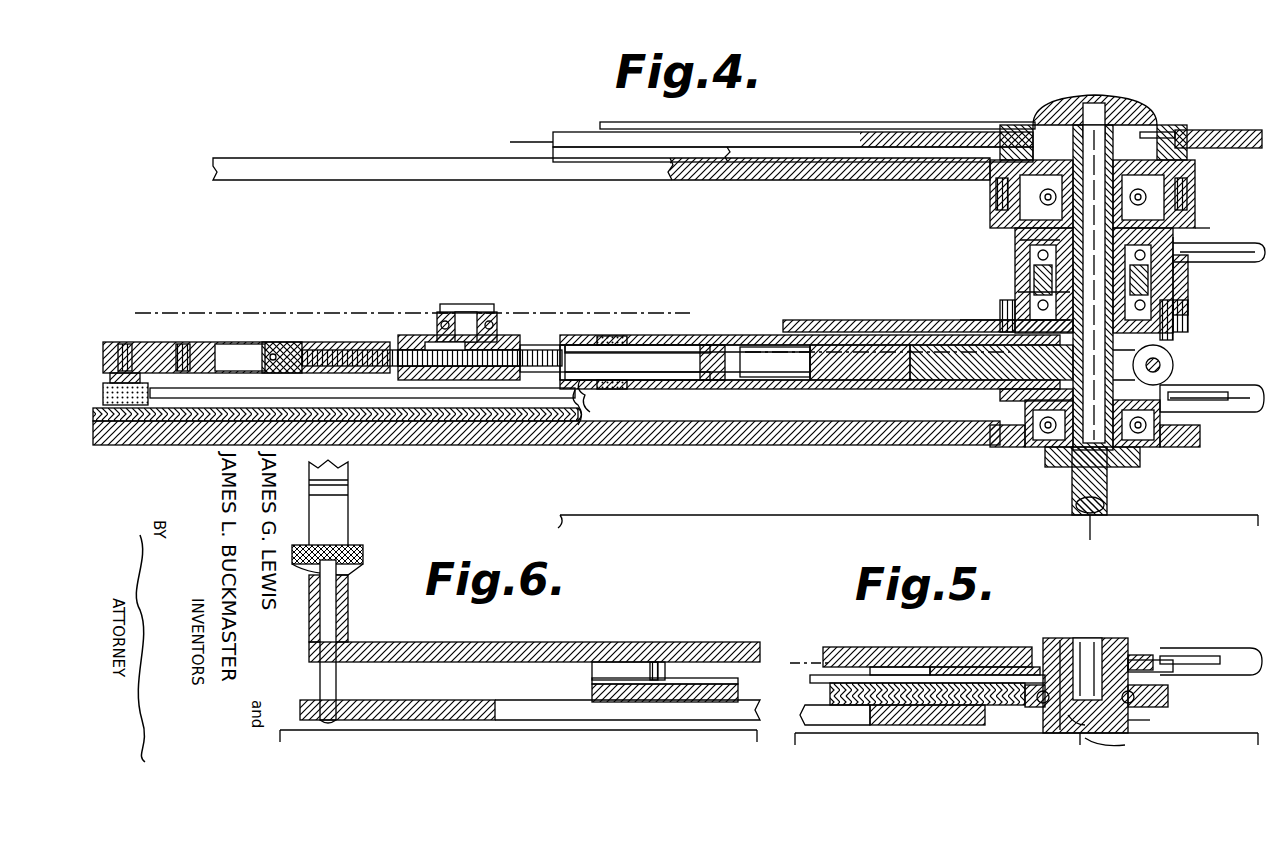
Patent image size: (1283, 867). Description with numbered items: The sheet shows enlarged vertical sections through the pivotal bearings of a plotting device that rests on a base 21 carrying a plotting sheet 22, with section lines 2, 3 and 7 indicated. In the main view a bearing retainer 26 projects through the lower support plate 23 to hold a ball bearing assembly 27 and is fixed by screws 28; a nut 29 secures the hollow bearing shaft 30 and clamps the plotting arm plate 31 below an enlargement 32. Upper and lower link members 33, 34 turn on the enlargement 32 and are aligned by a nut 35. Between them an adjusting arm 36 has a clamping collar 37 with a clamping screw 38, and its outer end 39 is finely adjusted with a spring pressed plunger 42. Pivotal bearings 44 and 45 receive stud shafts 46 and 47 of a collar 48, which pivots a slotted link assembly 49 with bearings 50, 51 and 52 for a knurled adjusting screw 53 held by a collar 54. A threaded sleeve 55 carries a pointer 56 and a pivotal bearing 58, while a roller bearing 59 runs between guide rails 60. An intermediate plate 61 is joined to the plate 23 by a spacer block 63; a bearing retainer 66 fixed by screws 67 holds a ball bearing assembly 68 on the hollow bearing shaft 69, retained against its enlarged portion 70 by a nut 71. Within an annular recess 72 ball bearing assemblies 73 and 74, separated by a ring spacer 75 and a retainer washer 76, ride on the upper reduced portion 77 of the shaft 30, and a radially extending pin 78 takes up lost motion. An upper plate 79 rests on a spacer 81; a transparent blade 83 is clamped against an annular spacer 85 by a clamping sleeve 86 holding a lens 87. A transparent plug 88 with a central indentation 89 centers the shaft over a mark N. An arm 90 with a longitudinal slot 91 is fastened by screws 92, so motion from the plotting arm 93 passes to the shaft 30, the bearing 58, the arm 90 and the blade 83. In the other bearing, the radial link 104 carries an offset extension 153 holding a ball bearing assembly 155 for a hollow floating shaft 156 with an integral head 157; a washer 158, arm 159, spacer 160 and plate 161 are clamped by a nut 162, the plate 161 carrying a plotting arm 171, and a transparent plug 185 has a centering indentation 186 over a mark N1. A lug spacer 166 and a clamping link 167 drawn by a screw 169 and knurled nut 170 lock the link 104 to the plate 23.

In FIG. 4, the section line 2- 2 is at (123, 302).
In FIG. 5, the section line 3- 3 is at (795, 658).
In FIG. 4, the section line 7- 7 is at (748, 348).
In FIG. 4, the base 21 is at (760, 506).
In FIG. 6, the base 21 is at (435, 732).
In FIG. 5, the base 21 is at (840, 734).
In FIG. 4, the plotting sheet 22 is at (1192, 513).
In FIG. 5, the plotting sheet 22 is at (1225, 733).
In FIG. 4, the lower support plate 23 is at (525, 445).
In FIG. 6, the lower support plate 23 is at (540, 630).
In FIG. 5, the lower support plate 23 is at (860, 647).
In FIG. 4, the bearing retainer 26 is at (1035, 447).
In FIG. 4, the ball bearing assembly 27 is at (1025, 400).
In FIG. 4, the screws 28 is at (1000, 450).
In FIG. 4, the nut 29 is at (1115, 467).
In FIG. 4, the hollow bearing shaft 30 is at (1075, 482).
In FIG. 4, the plotting arm plate 31 is at (1185, 395).
In FIG. 4, the enlargement 32 is at (975, 320).
In FIG. 4, the upper link member 33 is at (675, 335).
In FIG. 4, the lower link member 34 is at (710, 389).
In FIG. 4, the nut 35 is at (1190, 285).
In FIG. 4, the adjusting arm 36 is at (940, 380).
In FIG. 4, the clamping collar 37 is at (1165, 378).
In FIG. 4, the clamping screw 38 is at (1160, 365).
In FIG. 4, the outer end of adjusting arm 39 is at (805, 366).
In FIG. 4, the spring pressed plunger 42 is at (860, 380).
In FIG. 4, the pivotal bearing 44 is at (640, 372).
In FIG. 4, the pivotal bearing 45 is at (615, 390).
In FIG. 4, the stud shaft 46 is at (612, 336).
In FIG. 4, the stud shaft 47 is at (596, 398).
In FIG. 4, the collar 48 is at (585, 430).
In FIG. 4, the slotted link assembly 49 is at (560, 340).
In FIG. 4, the bearing 50 is at (285, 342).
In FIG. 4, the bearing 51 is at (605, 345).
In FIG. 4, the bearing 52 is at (695, 352).
In FIG. 4, the knurled adjusting screw 53 is at (328, 350).
In FIG. 4, the collar 54 is at (280, 343).
In FIG. 4, the threaded sleeve 55 is at (412, 340).
In FIG. 4, the pointer 56 is at (490, 340).
In FIG. 4, the pivotal bearing 58 is at (492, 305).
In FIG. 4, the roller bearing 59 is at (148, 398).
In FIG. 4, the guide rails 60 is at (395, 445).
In FIG. 4, the intermediate plate 61 is at (372, 162).
In FIG. 6, the spacer block 63 is at (335, 510).
In FIG. 4, the bearing retainer 66 is at (996, 195).
In FIG. 4, the screws 67 is at (1000, 198).
In FIG. 4, the ball bearing assembly 68 is at (1190, 198).
In FIG. 4, the hollow bearing shaft 69 is at (1035, 250).
In FIG. 4, the enlarged portion 70 is at (1032, 272).
In FIG. 4, the nut 71 is at (1165, 135).
In FIG. 4, the annular recess 72 is at (1018, 238).
In FIG. 4, the ball bearing assembly 73 is at (1200, 235).
In FIG. 4, the ball bearing assembly 74 is at (1165, 255).
In FIG. 4, the ring spacer 75 is at (1020, 290).
In FIG. 4, the retainer washer 76 is at (1183, 320).
In FIG. 4, the upper reduced portion 77 is at (1018, 318).
In FIG. 4, the radially extending pin 78 is at (1219, 243).
In FIG. 4, the upper plate 79 is at (572, 135).
In FIG. 4, the spacer 81 is at (526, 136).
In FIG. 4, the transparent blade 83 is at (828, 125).
In FIG. 4, the annular spacer 85 is at (1032, 140).
In FIG. 4, the clamping sleeve 86 is at (1170, 130).
In FIG. 4, the lens 87 is at (1100, 96).
In FIG. 4, the transparent plug 88 is at (1106, 490).
In FIG. 4, the central indentation 89 is at (1080, 512).
In FIG. 4, the arm 90 is at (830, 320).
In FIG. 4, the longitudinal slot 91 is at (540, 345).
In FIG. 4, the screws 92 is at (1002, 310).
In FIG. 4, the plotting arm 93 is at (1230, 405).
In FIG. 6, the radial link 104 is at (590, 680).
In FIG. 5, the radial link 104 is at (828, 675).
In FIG. 6, the offset extension 153 is at (665, 700).
In FIG. 5, the offset extension 153 is at (1010, 705).
In FIG. 5, the ball bearing assembly 155 is at (1130, 708).
In FIG. 5, the hollow floating shaft 156 is at (1090, 645).
In FIG. 5, the integral head 157 is at (1130, 725).
In FIG. 5, the washer 158 is at (1150, 683).
In FIG. 5, the arm 159 is at (980, 667).
In FIG. 5, the spacer 160 is at (1058, 640).
In FIG. 5, the plate 161 is at (1150, 662).
In FIG. 5, the nut 162 is at (1140, 655).
In FIG. 6, the lug spacer 166 is at (612, 662).
In FIG. 5, the lug spacer 166 is at (905, 667).
In FIG. 6, the clamping link 167 is at (560, 712).
In FIG. 5, the clamping link 167 is at (900, 708).
In FIG. 6, the screw 169 is at (345, 608).
In FIG. 6, the knurled nut 170 is at (365, 560).
In FIG. 5, the plotting arm 171 is at (1238, 676).
In FIG. 5, the transparent plug 185 is at (1075, 725).
In FIG. 5, the centering indentation 186 is at (1098, 747).
In FIG. 4, the selected mark N is at (1088, 538).
In FIG. 5, the axis N1 is at (1119, 755).